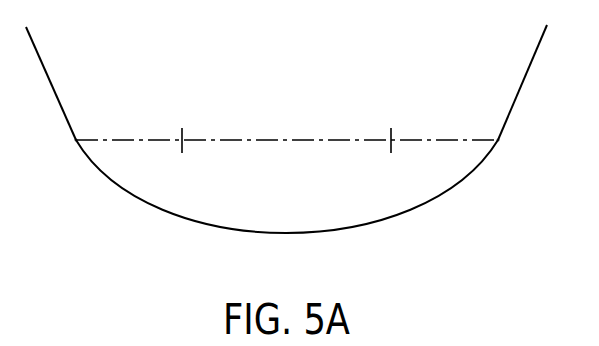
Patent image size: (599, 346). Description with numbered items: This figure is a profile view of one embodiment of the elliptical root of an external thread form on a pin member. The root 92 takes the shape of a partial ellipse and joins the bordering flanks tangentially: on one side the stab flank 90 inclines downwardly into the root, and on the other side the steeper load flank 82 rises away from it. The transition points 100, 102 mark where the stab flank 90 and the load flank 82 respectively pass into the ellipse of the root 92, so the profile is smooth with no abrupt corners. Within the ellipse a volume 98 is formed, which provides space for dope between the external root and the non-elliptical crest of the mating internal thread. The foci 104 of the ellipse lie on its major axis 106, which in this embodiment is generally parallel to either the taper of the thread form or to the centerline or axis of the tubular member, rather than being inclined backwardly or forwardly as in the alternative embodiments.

The load flank 82 is at (518, 88).
The stab flank 90 is at (53, 87).
The root 92 is at (285, 234).
The volume 98 is at (313, 202).
The transition point 100 is at (76, 143).
The transition point 102 is at (500, 143).
The foci 104 is at (184, 140).
The major axis 106 is at (286, 140).